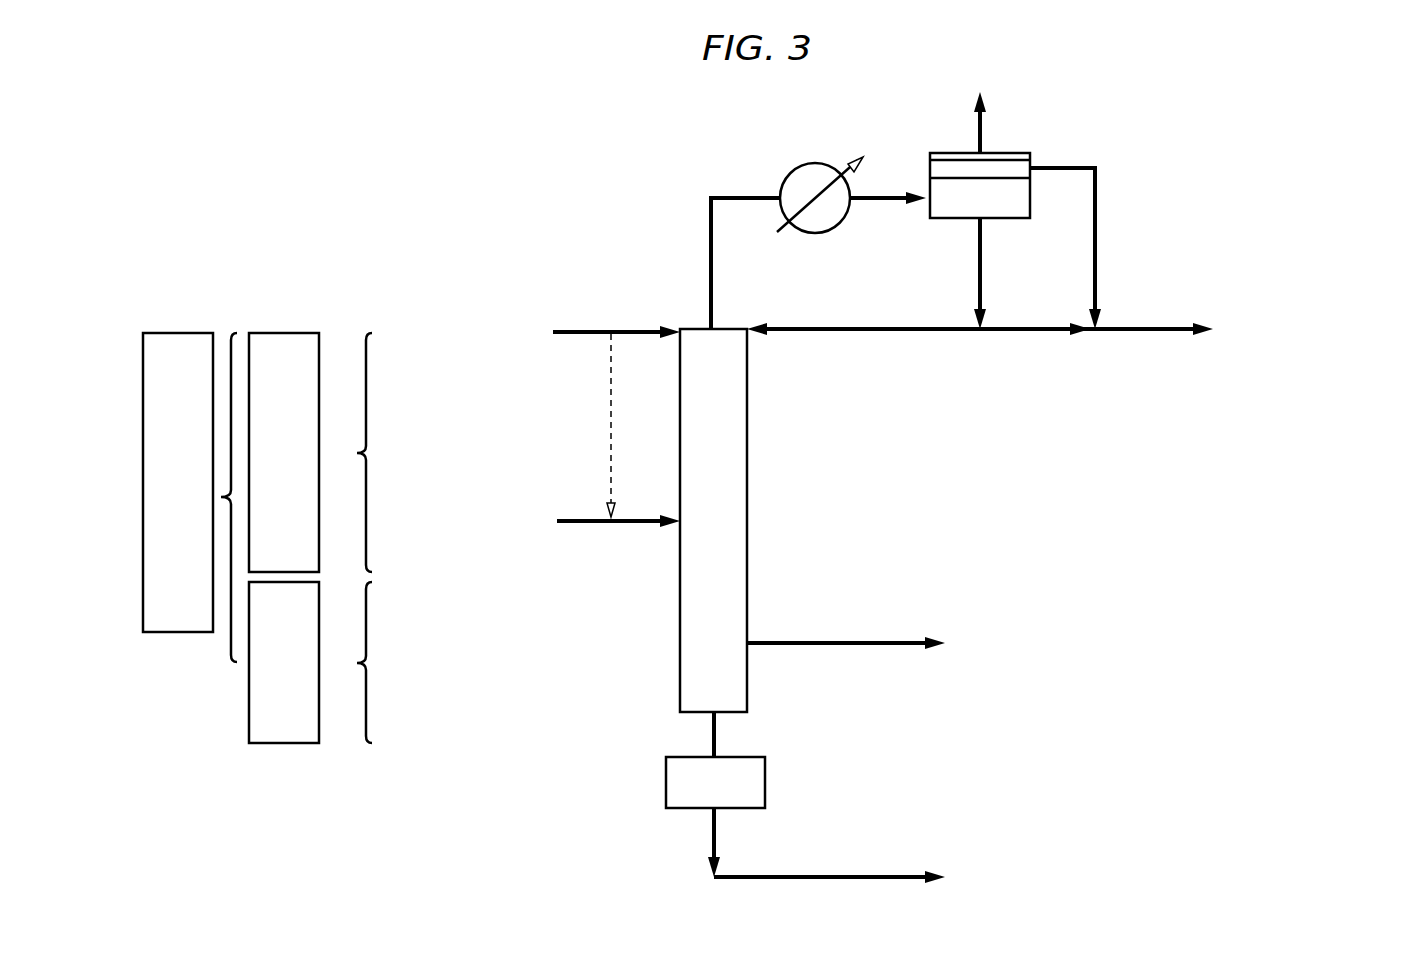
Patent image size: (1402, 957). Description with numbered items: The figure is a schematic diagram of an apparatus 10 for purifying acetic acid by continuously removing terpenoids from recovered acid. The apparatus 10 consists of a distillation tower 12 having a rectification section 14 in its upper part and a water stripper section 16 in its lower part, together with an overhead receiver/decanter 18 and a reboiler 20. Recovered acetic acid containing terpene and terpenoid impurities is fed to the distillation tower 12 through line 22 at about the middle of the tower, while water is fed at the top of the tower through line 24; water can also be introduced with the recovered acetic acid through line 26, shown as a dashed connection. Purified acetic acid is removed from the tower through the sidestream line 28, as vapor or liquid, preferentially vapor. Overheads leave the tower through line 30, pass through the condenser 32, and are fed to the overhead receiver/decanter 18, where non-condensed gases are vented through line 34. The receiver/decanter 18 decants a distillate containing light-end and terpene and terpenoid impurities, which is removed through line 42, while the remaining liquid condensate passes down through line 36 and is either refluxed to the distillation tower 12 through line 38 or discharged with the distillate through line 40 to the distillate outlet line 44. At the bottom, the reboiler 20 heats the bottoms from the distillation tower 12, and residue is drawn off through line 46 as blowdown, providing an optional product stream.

The apparatus 10 is at (340, 184).
The distillation tower 12 is at (723, 528).
The rectification section 14 is at (328, 452).
The water stripper section 16 is at (328, 662).
The overhead receiver/decanter 18 is at (926, 144).
The reboiler 20 is at (725, 793).
The line 22 is at (571, 520).
The line 24 is at (571, 328).
The line 26 is at (610, 413).
The sidestream line 28 is at (858, 641).
The line 30 is at (712, 292).
The condenser 32 is at (780, 162).
The line 34 is at (982, 137).
The aqueous phase line 36 is at (979, 270).
The line 38 is at (868, 333).
The line 40 is at (1032, 333).
The line 42 is at (1098, 248).
The distillate outlet 44 is at (1163, 326).
The line 46 is at (878, 880).